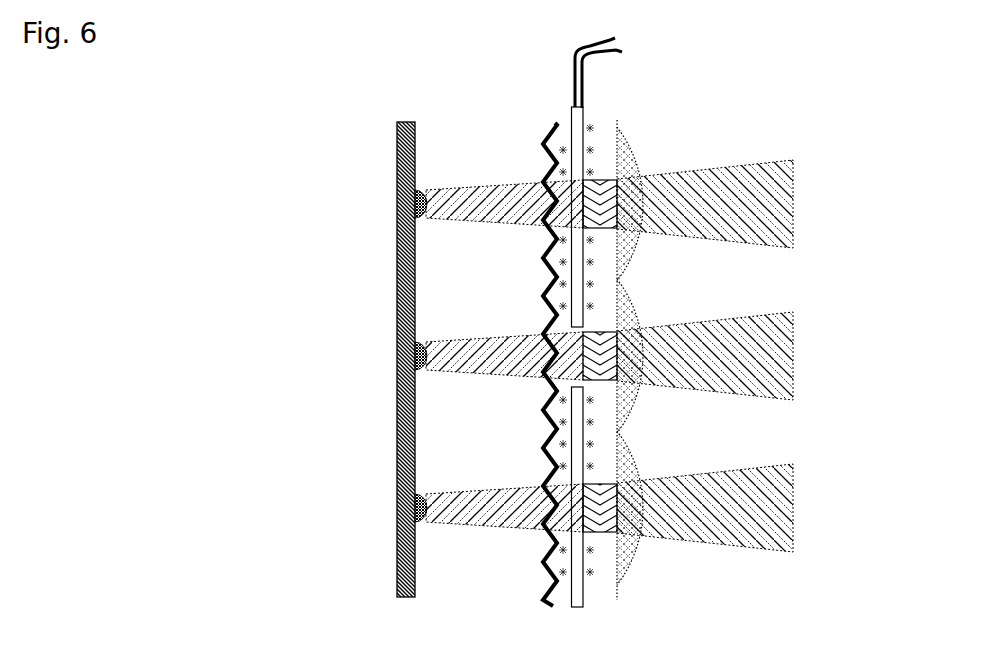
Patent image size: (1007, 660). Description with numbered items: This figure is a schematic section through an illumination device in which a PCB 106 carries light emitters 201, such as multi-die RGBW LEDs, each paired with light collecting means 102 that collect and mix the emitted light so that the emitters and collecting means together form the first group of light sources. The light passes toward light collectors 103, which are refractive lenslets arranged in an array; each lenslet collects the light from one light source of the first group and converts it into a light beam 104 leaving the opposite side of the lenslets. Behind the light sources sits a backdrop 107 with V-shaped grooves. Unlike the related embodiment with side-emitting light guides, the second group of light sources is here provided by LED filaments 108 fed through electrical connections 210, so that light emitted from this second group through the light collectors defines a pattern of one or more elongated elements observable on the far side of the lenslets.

The light collecting means 102 is at (508, 226).
The light collectors 103 is at (633, 168).
The light beam 104 is at (739, 206).
The PCB 106 is at (397, 287).
The backdrop 107 is at (555, 123).
The LED filaments 108 is at (580, 265).
The light emitters 201 is at (435, 219).
The electrical connections 210 is at (621, 40).